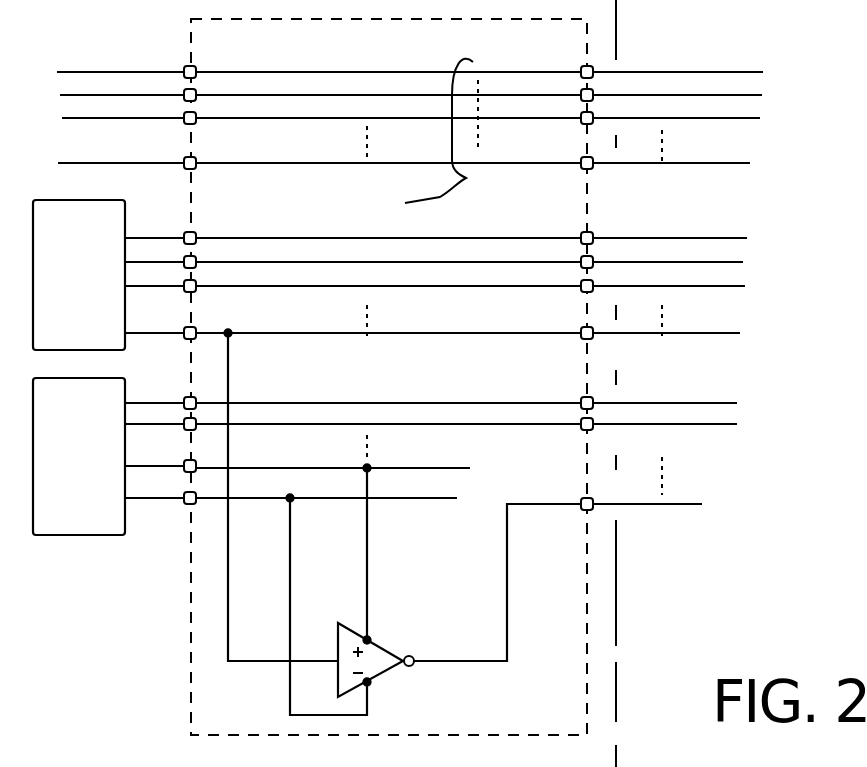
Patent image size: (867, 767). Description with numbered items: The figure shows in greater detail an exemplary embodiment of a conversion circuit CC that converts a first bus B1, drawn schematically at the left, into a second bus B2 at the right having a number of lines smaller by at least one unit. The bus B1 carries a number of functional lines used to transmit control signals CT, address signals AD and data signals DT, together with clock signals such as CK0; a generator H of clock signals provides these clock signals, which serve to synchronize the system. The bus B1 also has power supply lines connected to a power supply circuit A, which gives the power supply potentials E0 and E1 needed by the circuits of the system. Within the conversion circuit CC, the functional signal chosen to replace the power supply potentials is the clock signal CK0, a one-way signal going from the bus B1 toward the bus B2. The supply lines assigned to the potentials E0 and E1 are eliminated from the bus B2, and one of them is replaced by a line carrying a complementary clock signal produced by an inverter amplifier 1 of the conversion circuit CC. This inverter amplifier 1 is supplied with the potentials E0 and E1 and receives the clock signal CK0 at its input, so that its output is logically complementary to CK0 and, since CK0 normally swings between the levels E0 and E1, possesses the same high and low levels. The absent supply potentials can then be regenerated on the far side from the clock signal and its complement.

The bus B1 is at (165, 58).
The bus B2 is at (726, 64).
The generator of clock signals H is at (125, 222).
The power supply circuit A is at (97, 535).
The control signals CT is at (408, 131).
The address signals AD is at (357, 199).
The data signals DT is at (358, 219).
The clock signal CK0 is at (690, 345).
The power supply potential E1 is at (470, 470).
The power supply potential E0 is at (460, 490).
The inverter amplifier 1 is at (338, 640).
The conversion circuit CC is at (205, 700).